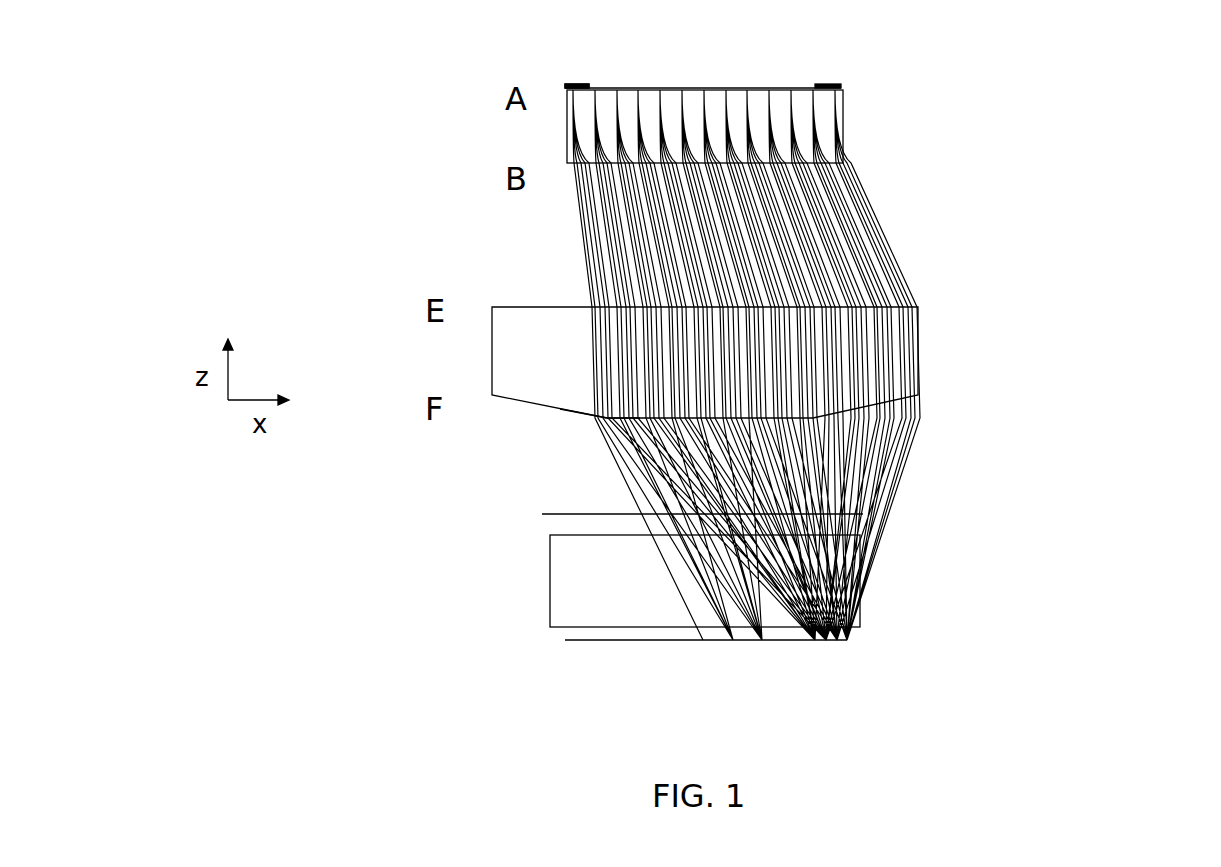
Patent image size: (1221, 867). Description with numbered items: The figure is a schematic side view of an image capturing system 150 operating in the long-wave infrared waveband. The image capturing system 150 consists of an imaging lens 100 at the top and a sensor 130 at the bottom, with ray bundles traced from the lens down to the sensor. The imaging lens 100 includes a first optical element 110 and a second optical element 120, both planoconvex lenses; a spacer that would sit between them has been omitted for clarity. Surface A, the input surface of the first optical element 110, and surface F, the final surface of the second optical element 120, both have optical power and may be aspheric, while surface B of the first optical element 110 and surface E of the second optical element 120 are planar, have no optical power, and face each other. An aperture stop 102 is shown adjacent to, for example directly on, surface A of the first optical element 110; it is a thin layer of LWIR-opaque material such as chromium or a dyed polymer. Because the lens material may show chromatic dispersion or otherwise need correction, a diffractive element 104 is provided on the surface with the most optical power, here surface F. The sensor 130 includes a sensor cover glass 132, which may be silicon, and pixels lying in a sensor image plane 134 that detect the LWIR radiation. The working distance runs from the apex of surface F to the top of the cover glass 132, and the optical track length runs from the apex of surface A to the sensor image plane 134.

The imaging lens 100 is at (852, 251).
The aperture stop 102 is at (574, 86).
The diffractive element 104 is at (608, 418).
The first optical element 110 is at (782, 126).
The second optical element 120 is at (769, 362).
The sensor 130 is at (808, 580).
The sensor cover glass 132 is at (862, 572).
The sensor image plane 134 is at (862, 630).
The image capturing system 150 is at (647, 54).